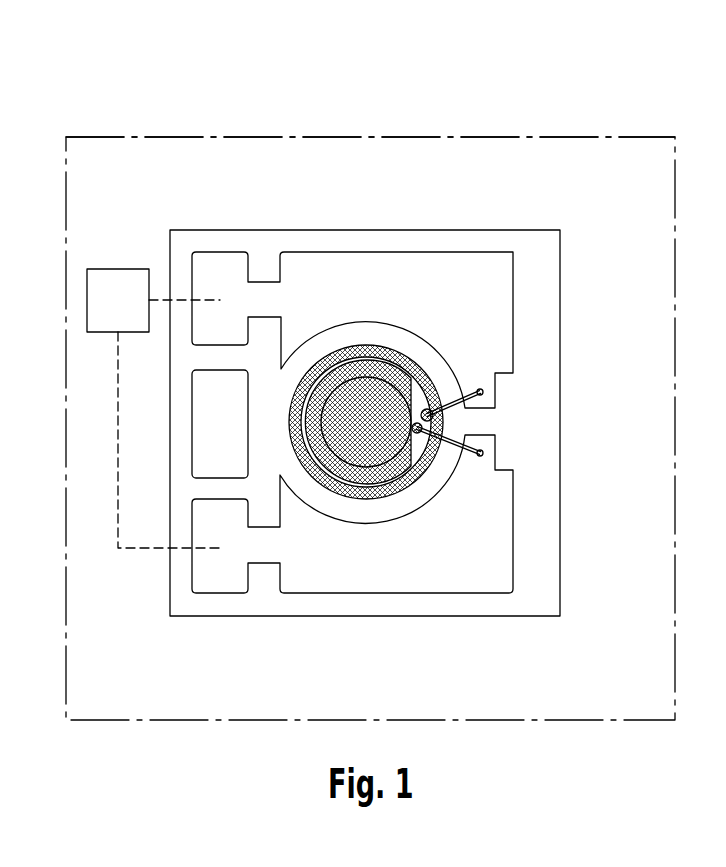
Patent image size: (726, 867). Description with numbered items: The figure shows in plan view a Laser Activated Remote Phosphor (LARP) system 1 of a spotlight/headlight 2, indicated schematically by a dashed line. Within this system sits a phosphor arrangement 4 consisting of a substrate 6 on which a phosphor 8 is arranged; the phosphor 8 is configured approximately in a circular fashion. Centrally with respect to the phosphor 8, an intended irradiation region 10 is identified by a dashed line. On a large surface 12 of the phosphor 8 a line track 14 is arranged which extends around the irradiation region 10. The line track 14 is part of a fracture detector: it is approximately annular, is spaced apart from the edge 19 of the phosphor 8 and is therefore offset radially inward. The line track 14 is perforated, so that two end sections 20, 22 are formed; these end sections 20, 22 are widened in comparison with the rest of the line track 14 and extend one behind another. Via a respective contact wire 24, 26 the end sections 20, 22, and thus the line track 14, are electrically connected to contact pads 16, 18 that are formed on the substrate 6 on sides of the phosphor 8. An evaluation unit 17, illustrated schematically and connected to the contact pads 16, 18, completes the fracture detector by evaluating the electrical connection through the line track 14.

The Laser Activated Remote Phosphor (LARP) system 1 is at (610, 137).
The spotlight/headlight 2 is at (370, 88).
The phosphor arrangement 4 is at (348, 173).
The substrate 6 is at (543, 267).
The phosphor 8 is at (377, 470).
The irradiation region 10 is at (340, 492).
The large surface 12 is at (390, 478).
The line track 14 is at (335, 352).
The contact pad 16 is at (492, 340).
The evaluation unit 17 is at (133, 312).
The contact pad 18 is at (494, 547).
The edge 19 is at (316, 484).
The end section 20 is at (452, 366).
The end section 22 is at (433, 462).
The contact wire 24 is at (450, 407).
The contact wire 26 is at (437, 438).